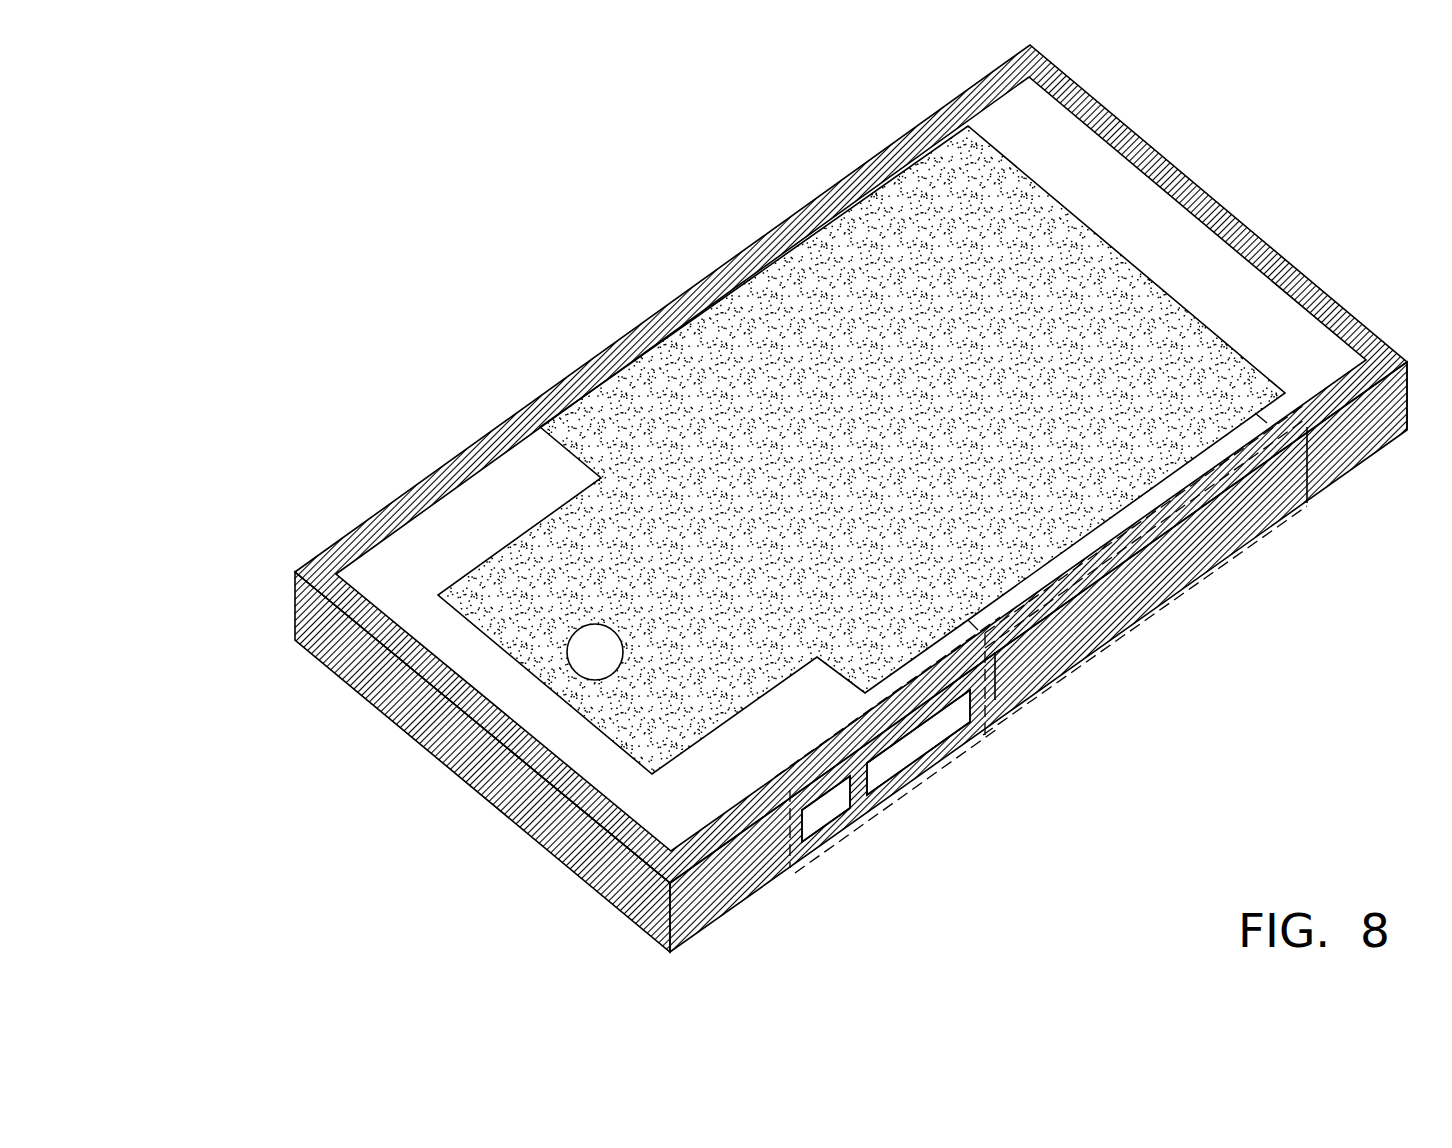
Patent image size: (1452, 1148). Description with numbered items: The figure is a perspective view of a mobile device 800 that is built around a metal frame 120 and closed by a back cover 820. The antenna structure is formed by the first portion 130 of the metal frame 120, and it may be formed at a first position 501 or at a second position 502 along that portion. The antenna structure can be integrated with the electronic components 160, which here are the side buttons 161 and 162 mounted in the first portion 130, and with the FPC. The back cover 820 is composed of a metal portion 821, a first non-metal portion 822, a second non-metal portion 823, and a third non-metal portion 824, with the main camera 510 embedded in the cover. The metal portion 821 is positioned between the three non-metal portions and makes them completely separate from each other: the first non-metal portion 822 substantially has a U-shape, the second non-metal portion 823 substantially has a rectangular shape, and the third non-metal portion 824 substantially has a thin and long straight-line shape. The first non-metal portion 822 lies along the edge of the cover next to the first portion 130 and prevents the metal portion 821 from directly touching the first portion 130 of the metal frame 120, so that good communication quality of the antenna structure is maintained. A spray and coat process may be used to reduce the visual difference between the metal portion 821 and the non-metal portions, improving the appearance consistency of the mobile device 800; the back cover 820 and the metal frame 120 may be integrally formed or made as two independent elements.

The mobile device 800 is at (215, 103).
The metal frame 120 is at (1242, 224).
The first portion 130 is at (853, 787).
The electronic components 160 is at (242, 170).
The side button 161 is at (910, 892).
The side button 162 is at (1118, 762).
The first position 501 is at (937, 767).
The second position 502 is at (1160, 612).
The main camera 510 is at (596, 650).
The back cover 820 is at (815, 102).
The metal portion 821 is at (862, 432).
The first non-metal portion 822 is at (523, 487).
The second non-metal portion 823 is at (1003, 125).
The third non-metal portion 824 is at (1182, 470).